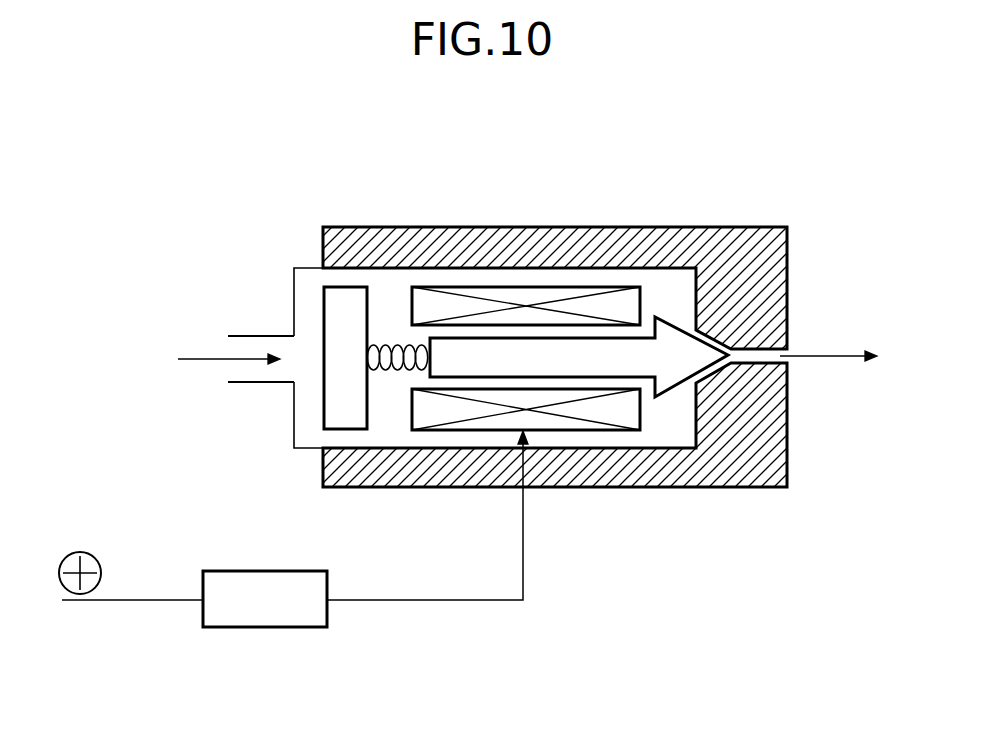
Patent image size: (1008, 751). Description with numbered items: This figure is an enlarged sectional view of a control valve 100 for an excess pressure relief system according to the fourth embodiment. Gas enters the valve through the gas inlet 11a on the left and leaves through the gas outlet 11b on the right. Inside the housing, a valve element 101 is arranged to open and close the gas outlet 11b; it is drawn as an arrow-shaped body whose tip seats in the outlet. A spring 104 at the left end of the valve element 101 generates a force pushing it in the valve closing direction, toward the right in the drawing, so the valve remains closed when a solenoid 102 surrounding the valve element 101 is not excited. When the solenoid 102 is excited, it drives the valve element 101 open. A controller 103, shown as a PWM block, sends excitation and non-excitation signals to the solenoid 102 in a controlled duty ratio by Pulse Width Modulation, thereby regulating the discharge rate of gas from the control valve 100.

The control valve 100 is at (698, 198).
The valve element 101 is at (693, 357).
The solenoid 102 is at (582, 432).
The controller 103 is at (258, 570).
The spring 104 is at (392, 370).
The gas inlet 11a is at (243, 336).
The gas outlet 11b is at (750, 361).